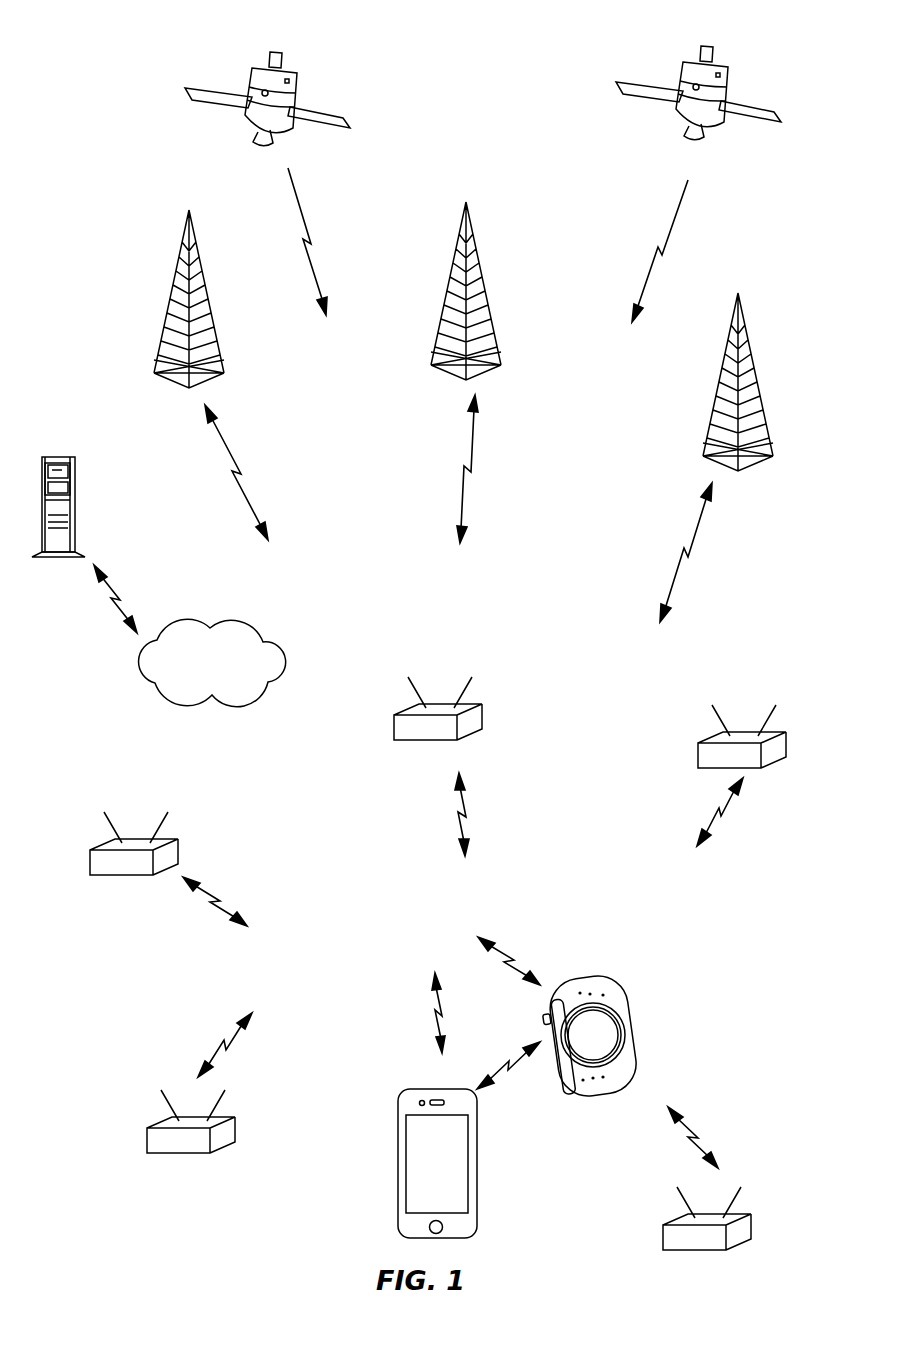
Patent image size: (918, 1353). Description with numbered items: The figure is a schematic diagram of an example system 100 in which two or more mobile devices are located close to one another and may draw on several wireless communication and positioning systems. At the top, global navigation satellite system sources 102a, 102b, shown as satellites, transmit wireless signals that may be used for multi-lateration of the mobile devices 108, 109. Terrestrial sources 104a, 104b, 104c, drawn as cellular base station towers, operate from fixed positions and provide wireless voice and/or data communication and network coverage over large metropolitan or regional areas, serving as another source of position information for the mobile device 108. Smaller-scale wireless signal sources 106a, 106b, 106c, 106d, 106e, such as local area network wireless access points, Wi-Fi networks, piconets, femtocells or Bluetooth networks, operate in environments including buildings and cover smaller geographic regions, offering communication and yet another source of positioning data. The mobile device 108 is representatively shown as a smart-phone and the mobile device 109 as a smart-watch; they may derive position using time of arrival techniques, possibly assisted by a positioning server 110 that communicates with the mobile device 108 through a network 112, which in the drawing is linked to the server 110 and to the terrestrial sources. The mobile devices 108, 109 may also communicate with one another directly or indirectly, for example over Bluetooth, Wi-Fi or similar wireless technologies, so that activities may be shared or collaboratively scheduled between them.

The system 100 is at (113, 62).
The global navigation satellite system source 102a is at (285, 57).
The global navigation satellite system source 102b is at (700, 50).
The terrestrial source 104a is at (188, 218).
The terrestrial source 104b is at (468, 210).
The terrestrial source 104c is at (740, 302).
The wireless signal source 106a is at (178, 840).
The wireless signal source 106b is at (485, 708).
The wireless signal source 106c is at (698, 748).
The wireless signal source 106d is at (235, 1117).
The wireless signal source 106e is at (663, 1228).
The mobile device 108 is at (477, 1125).
The mobile device 109 is at (616, 997).
The positioning server 110 is at (57, 457).
The network 112 is at (230, 620).